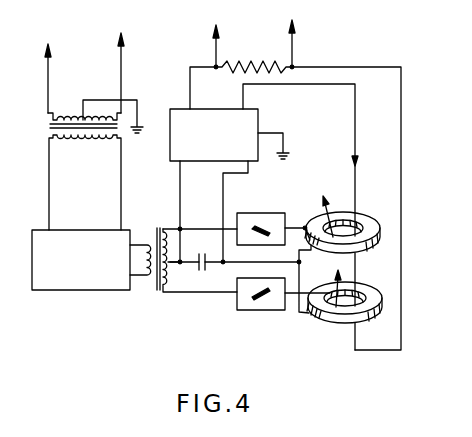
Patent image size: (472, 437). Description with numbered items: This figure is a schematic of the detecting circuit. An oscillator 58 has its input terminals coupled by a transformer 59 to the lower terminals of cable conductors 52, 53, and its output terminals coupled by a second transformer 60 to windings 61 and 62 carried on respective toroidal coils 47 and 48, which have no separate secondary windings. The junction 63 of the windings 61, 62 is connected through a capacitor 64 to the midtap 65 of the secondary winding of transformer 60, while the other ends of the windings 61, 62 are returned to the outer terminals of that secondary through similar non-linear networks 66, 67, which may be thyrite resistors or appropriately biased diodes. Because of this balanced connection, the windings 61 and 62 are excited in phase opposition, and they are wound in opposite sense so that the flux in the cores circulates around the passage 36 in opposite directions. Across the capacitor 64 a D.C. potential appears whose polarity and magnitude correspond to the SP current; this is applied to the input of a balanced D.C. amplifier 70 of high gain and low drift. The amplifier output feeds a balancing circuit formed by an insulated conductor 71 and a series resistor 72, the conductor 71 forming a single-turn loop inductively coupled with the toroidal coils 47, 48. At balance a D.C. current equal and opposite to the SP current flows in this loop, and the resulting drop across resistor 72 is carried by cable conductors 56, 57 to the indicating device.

The passage 36 is at (345, 232).
The toroidal coil 47 is at (370, 227).
The toroidal coil 48 is at (358, 318).
The cable conductor 52 is at (49, 72).
The cable conductor 53 is at (123, 67).
The cable conductor 56 is at (219, 43).
The cable conductor 57 is at (294, 37).
The oscillator 58 is at (42, 290).
The transformer 59 is at (50, 132).
The transformer 60 is at (158, 285).
The winding 61 is at (304, 227).
The winding 62 is at (332, 322).
The junction 63 is at (326, 285).
The capacitor 64 is at (201, 253).
The midtap 65 is at (173, 263).
The non-linear network 66 is at (273, 213).
The non-linear network 67 is at (243, 310).
The balanced D.C. amplifier 70 is at (260, 132).
The insulated conductor 71 is at (322, 67).
The series resistor 72 is at (270, 64).